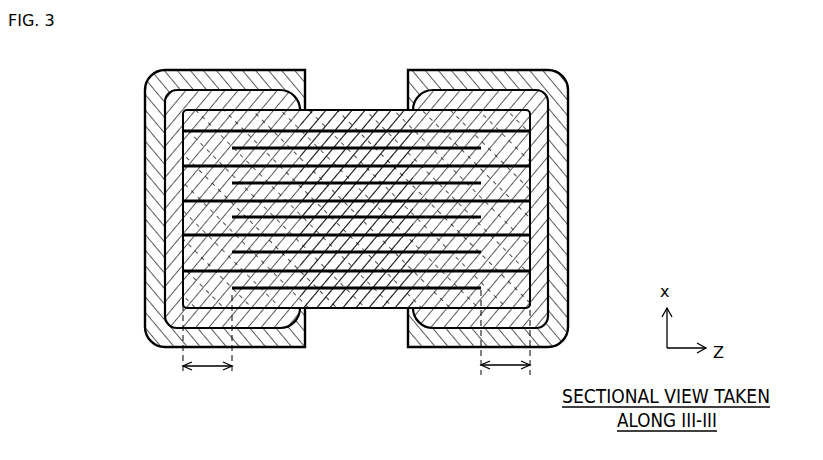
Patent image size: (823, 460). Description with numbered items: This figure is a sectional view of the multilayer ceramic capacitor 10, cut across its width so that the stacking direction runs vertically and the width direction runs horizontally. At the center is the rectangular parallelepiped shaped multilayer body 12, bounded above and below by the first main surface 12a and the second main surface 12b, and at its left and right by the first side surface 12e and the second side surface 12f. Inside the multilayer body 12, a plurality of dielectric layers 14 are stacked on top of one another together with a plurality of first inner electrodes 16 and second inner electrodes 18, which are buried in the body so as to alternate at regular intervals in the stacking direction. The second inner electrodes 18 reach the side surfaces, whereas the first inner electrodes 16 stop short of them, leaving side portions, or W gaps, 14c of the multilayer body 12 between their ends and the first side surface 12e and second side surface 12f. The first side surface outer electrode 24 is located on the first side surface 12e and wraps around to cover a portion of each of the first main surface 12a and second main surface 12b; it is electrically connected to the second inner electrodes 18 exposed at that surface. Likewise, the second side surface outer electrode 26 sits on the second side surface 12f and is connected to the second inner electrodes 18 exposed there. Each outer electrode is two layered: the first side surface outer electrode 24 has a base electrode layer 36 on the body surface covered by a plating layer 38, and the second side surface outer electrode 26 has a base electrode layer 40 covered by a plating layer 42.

The multilayer ceramic capacitor 10 is at (136, 43).
The multilayer body 12 is at (367, 109).
The first main surface 12a is at (394, 109).
The second main surface 12b is at (366, 309).
The first side surface 12e is at (183, 257).
The second side surface 12f is at (531, 243).
The dielectric layer 14 is at (353, 157).
The side portion 14c is at (356, 347).
The first inner electrode 16 is at (343, 218).
The second inner electrode 18 is at (372, 210).
The first side surface outer electrode 24 is at (144, 145).
The second side surface outer electrode 26 is at (569, 143).
The base electrode layer 36 is at (172, 213).
The plating layer 38 is at (155, 182).
The base electrode layer 40 is at (540, 208).
The plating layer 42 is at (557, 170).